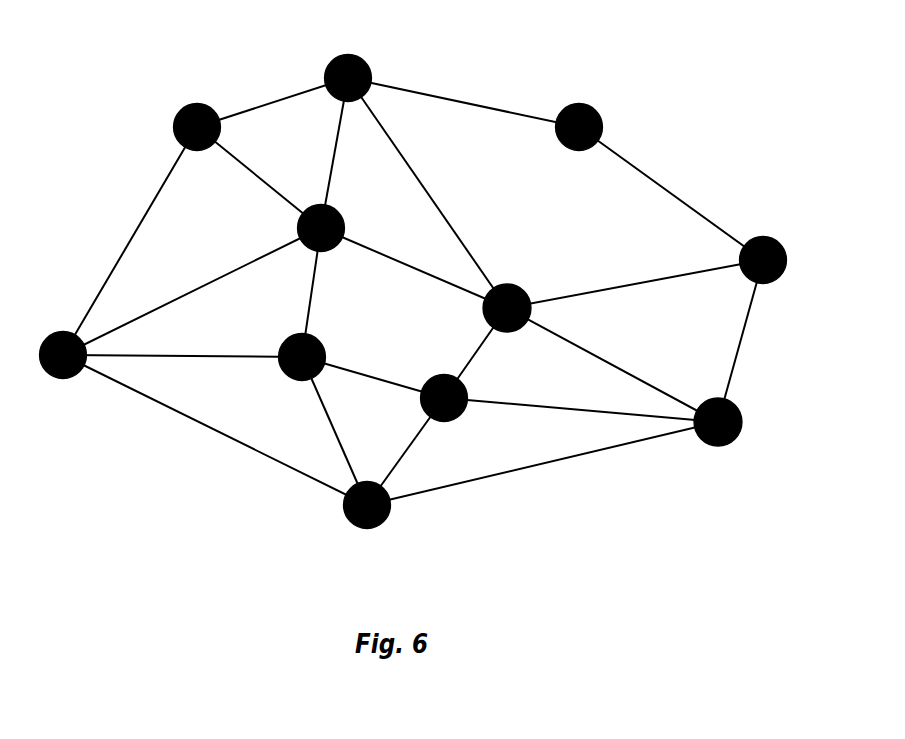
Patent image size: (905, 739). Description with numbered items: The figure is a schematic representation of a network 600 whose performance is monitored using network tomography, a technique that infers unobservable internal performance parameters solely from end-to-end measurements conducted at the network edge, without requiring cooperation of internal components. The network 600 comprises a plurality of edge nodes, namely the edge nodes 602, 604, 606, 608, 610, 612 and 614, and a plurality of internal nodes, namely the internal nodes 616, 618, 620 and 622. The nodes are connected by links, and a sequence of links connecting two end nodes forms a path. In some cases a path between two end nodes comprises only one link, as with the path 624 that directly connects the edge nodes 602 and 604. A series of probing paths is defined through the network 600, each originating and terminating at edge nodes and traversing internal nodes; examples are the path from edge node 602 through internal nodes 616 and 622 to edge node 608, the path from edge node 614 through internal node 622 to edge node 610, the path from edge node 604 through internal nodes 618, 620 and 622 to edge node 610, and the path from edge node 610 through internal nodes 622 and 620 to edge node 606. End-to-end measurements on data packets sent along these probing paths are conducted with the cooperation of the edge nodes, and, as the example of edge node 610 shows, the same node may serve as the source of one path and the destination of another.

The network 600 is at (622, 561).
The edge node 602 is at (125, 100).
The edge node 604 is at (92, 395).
The edge node 606 is at (296, 515).
The edge node 608 is at (671, 453).
The edge node 610 is at (722, 214).
The edge node 612 is at (535, 104).
The edge node 614 is at (305, 57).
The internal node 616 is at (362, 266).
The internal node 618 is at (266, 377).
The internal node 620 is at (480, 420).
The internal node 622 is at (556, 270).
The path 624 is at (113, 241).